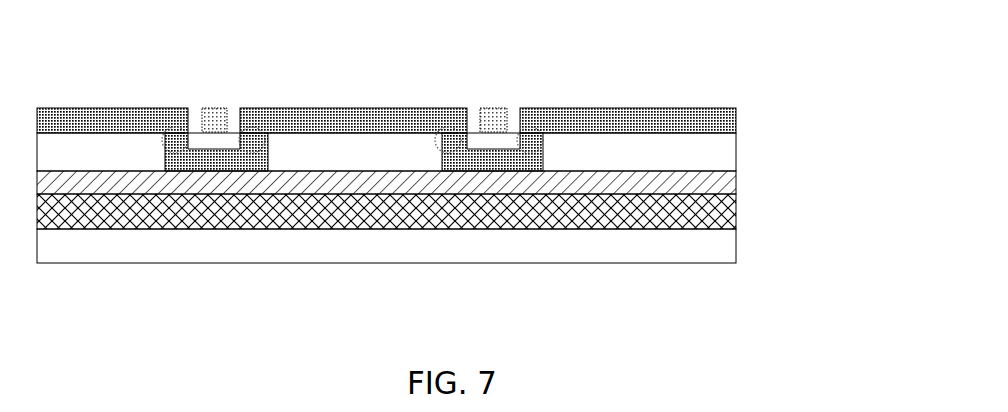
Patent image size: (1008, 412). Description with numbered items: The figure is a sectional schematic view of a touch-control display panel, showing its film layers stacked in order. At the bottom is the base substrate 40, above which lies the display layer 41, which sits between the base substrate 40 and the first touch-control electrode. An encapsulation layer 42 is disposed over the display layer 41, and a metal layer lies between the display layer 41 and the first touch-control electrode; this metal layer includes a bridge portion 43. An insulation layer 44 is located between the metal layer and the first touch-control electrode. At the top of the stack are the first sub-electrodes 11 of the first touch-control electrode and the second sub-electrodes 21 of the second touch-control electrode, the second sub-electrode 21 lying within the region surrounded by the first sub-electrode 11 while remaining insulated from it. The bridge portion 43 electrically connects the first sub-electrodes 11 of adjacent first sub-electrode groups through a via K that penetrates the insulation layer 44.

The first sub-electrode 11 is at (88, 120).
The second sub-electrode 21 is at (213, 110).
The via K is at (172, 108).
The base substrate 40 is at (711, 247).
The display layer 41 is at (711, 213).
The encapsulation layer 42 is at (711, 185).
The bridge portion 43 is at (186, 135).
The insulation layer 44 is at (711, 148).